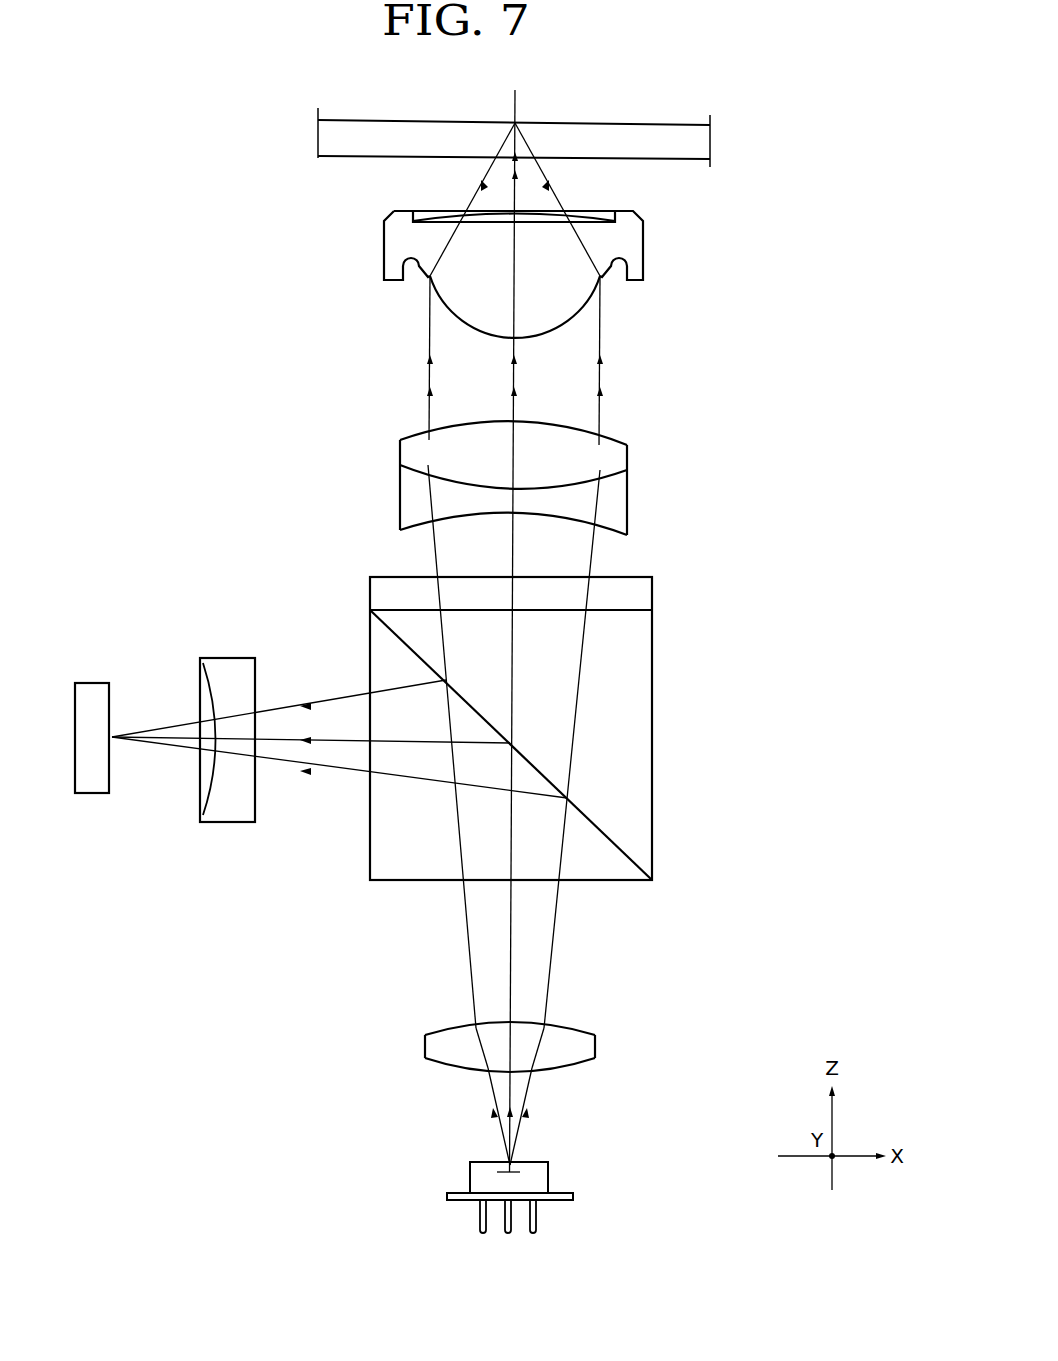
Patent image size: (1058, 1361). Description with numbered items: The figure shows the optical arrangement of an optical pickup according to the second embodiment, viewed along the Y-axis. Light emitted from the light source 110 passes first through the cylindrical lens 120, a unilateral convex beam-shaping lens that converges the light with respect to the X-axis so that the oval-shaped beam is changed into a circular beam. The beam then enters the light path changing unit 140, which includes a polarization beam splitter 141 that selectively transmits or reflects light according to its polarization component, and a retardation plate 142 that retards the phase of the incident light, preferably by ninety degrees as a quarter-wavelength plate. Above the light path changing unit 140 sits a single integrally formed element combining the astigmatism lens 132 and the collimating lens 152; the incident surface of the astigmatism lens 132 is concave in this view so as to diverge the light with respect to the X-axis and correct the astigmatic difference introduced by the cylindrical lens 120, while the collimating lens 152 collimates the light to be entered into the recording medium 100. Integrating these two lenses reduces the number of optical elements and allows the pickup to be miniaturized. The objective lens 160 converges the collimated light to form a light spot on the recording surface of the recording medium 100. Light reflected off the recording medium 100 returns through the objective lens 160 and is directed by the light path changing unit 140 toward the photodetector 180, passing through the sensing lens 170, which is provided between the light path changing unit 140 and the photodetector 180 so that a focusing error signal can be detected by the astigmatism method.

The recording medium 100 is at (709, 146).
The light source 110 is at (543, 1180).
The cylindrical lens 120 is at (582, 1053).
The astigmatism lens 132 is at (615, 513).
The light path changing unit 140 is at (565, 728).
The polarization beam splitter 141 is at (643, 793).
The retardation plate 142 is at (643, 591).
The collimating lens 152 is at (622, 457).
The objective lens 160 is at (637, 242).
The sensing lens 170 is at (227, 822).
The photodetector 180 is at (92, 793).